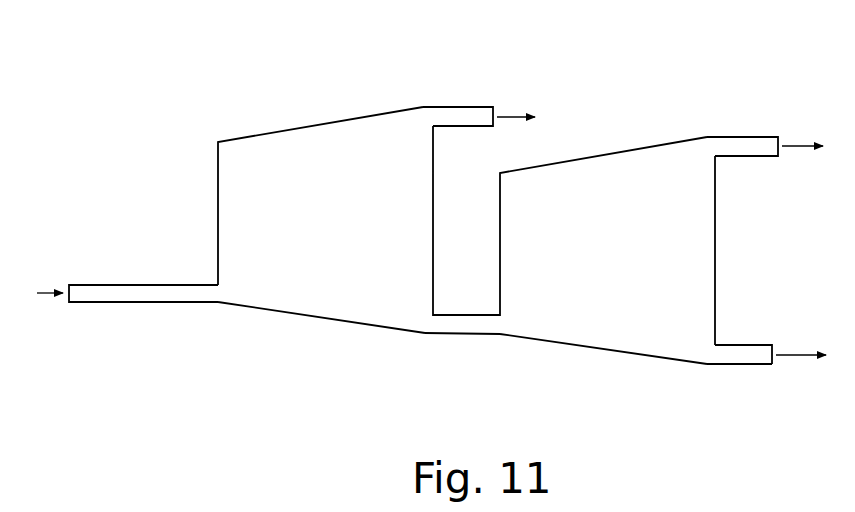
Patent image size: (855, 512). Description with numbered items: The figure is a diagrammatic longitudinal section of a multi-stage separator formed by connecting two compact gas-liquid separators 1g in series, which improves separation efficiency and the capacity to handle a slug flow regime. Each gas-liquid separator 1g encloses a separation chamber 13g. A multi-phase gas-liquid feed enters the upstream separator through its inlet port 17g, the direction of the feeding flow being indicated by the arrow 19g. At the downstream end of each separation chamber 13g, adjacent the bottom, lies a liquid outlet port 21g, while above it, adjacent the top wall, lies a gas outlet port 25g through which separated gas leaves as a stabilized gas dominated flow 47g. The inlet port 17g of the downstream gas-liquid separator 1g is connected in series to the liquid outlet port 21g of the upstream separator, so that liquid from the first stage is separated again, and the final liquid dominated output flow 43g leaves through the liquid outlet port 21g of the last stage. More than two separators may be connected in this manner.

The gas-liquid separator 1g is at (242, 110).
The separation chamber 13g is at (238, 210).
The inlet port 17g is at (214, 299).
The feeding flow direction arrow 19g is at (48, 292).
The liquid outlet port 21g is at (432, 322).
The gas outlet port 25g is at (432, 115).
The liquid dominated output flow 43g is at (793, 353).
The gas dominated flow 47g is at (510, 112).